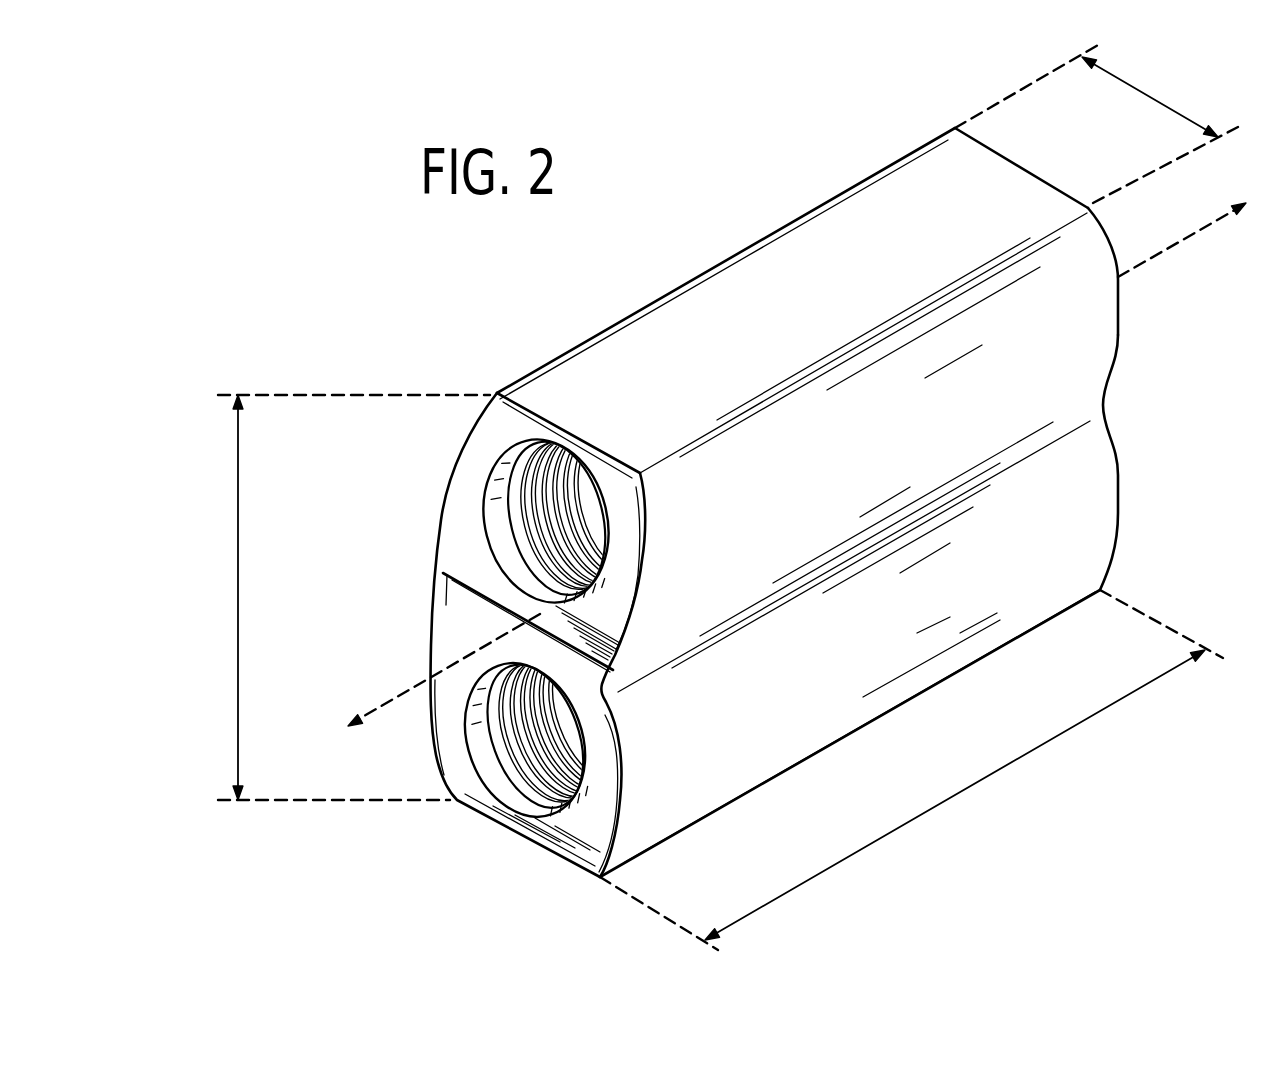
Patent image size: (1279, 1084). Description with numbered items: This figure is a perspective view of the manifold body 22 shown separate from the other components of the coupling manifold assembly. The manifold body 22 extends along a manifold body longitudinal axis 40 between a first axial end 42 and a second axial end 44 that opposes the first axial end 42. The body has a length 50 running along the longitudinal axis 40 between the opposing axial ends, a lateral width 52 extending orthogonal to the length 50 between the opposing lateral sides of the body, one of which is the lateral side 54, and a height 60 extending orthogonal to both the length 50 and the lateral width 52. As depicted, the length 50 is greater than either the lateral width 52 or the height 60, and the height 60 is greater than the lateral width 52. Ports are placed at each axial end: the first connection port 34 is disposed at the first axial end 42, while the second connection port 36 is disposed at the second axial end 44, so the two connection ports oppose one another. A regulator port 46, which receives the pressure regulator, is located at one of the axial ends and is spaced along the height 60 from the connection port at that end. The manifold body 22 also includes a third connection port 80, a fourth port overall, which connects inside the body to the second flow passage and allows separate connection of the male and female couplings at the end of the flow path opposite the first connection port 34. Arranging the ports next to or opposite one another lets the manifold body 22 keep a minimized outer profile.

The manifold body 22 is at (765, 478).
The first connection port 34 is at (1168, 462).
The second connection port 36 is at (497, 767).
The manifold body longitudinal axis 40 is at (373, 710).
The first axial end 42 is at (1055, 160).
The second axial end 44 is at (469, 637).
The regulator port 46 is at (1154, 251).
The length 50 is at (922, 815).
The lateral width 52 is at (1160, 100).
The lateral side 54 is at (912, 657).
The height 60 is at (238, 610).
The third connection port 80 is at (498, 533).